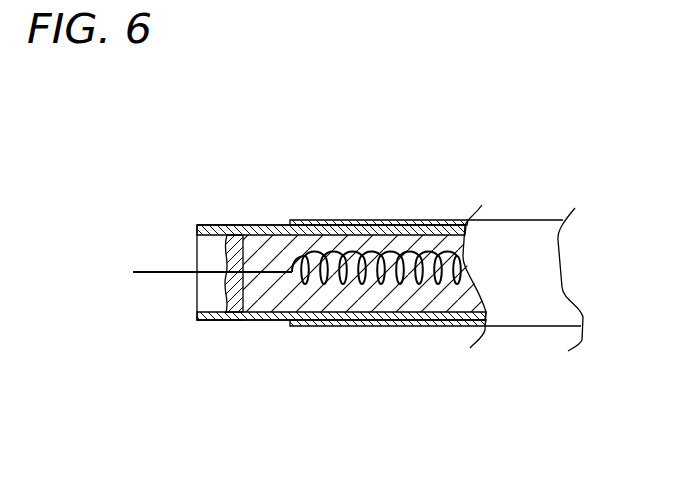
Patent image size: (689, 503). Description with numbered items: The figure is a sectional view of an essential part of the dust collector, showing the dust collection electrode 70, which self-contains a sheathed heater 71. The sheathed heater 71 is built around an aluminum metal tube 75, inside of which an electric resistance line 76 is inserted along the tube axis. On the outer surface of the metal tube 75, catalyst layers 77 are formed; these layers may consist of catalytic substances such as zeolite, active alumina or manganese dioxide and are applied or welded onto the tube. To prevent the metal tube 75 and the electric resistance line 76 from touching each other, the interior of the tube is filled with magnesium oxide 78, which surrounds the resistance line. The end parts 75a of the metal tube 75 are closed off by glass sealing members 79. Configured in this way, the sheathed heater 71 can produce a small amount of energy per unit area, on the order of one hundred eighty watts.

The dust collection electrode 70 is at (516, 127).
The sheathed heater 71 is at (207, 212).
The metal tube 75 is at (272, 226).
The end parts 75a is at (238, 226).
The electric resistance line 76 is at (150, 277).
The catalyst layers 77 is at (428, 221).
The magnesium oxide 78 is at (356, 248).
The glass sealing members 79 is at (238, 312).